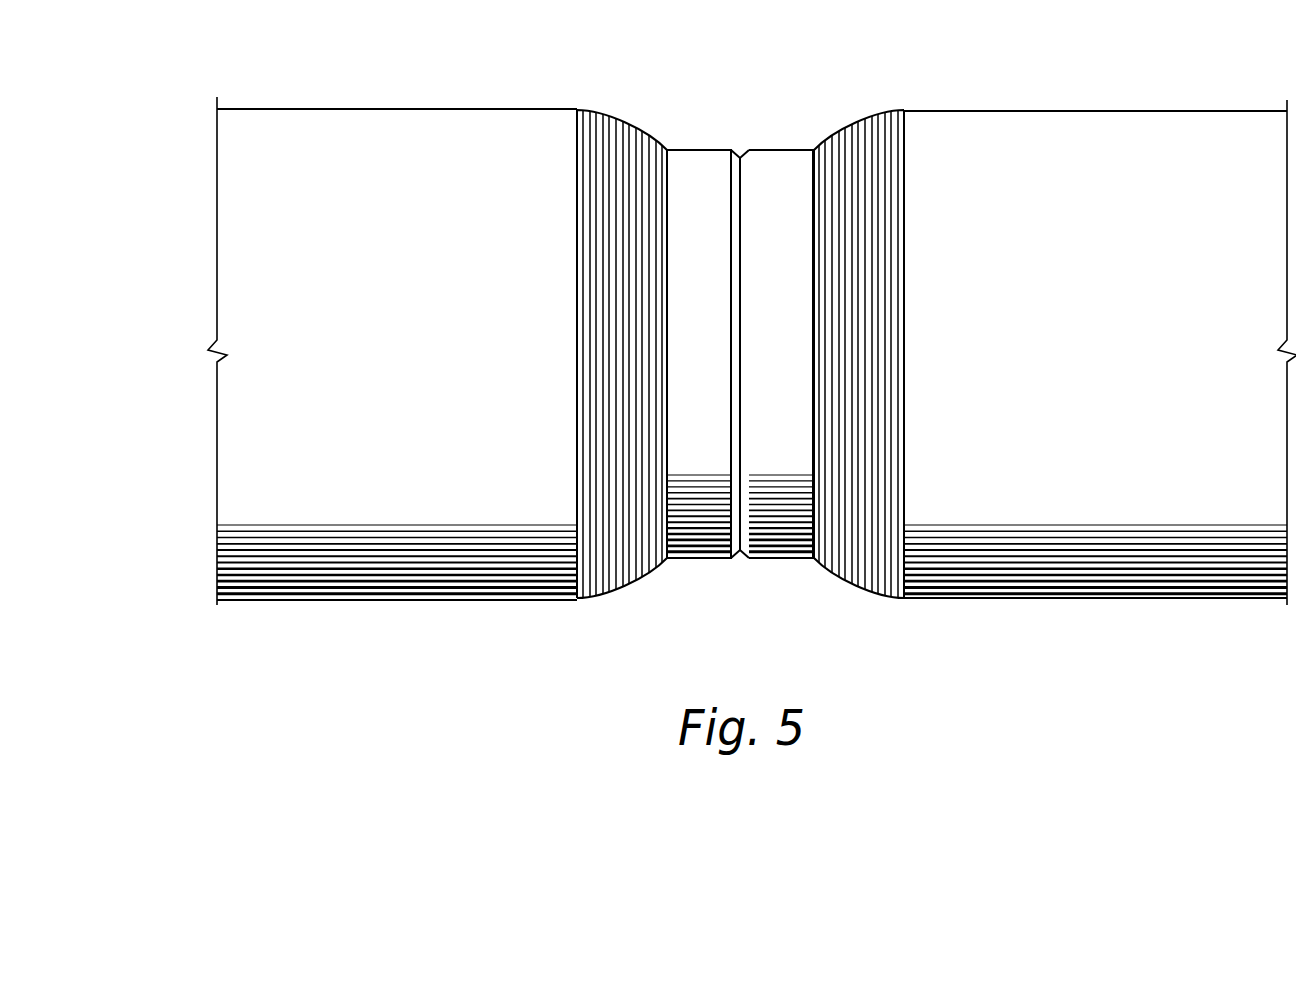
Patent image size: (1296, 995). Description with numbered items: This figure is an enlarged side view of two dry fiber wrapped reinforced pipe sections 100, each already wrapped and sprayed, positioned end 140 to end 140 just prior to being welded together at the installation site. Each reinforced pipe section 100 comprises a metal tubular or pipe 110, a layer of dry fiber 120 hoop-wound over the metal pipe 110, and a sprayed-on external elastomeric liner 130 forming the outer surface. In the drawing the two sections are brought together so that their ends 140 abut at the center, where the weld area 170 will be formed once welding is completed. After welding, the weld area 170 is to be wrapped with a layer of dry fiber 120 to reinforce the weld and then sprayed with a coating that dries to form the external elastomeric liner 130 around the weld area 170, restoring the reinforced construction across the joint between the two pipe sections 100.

The reinforced pipe section 100 is at (440, 612).
The metal tubular or pipe 110 is at (700, 574).
The layer of dry fiber 120 is at (614, 117).
The external elastomeric liner 130 is at (424, 108).
The end 140 is at (690, 150).
The weld area 170 is at (740, 572).